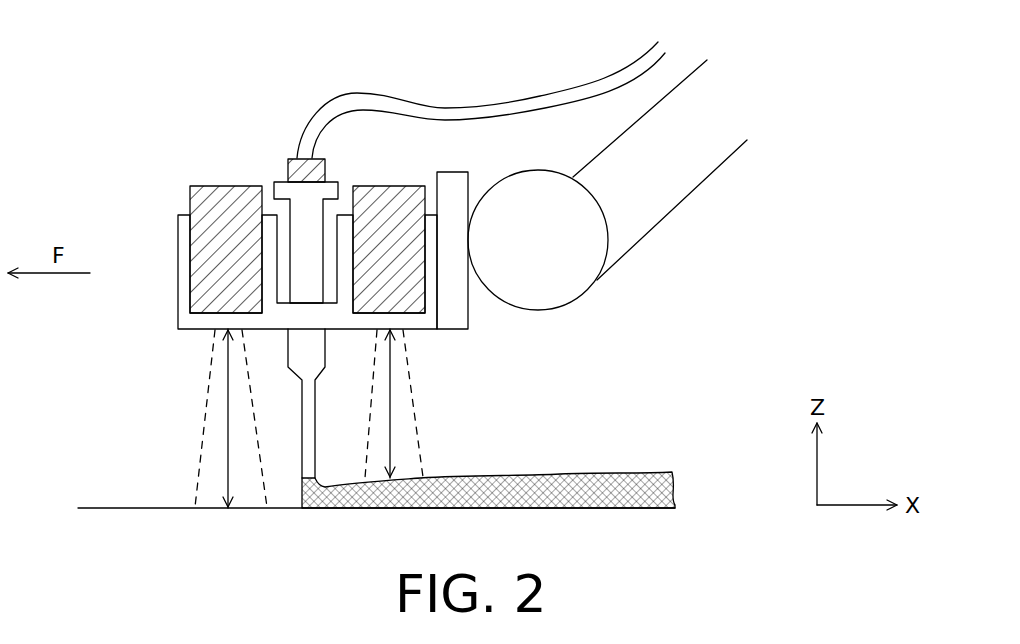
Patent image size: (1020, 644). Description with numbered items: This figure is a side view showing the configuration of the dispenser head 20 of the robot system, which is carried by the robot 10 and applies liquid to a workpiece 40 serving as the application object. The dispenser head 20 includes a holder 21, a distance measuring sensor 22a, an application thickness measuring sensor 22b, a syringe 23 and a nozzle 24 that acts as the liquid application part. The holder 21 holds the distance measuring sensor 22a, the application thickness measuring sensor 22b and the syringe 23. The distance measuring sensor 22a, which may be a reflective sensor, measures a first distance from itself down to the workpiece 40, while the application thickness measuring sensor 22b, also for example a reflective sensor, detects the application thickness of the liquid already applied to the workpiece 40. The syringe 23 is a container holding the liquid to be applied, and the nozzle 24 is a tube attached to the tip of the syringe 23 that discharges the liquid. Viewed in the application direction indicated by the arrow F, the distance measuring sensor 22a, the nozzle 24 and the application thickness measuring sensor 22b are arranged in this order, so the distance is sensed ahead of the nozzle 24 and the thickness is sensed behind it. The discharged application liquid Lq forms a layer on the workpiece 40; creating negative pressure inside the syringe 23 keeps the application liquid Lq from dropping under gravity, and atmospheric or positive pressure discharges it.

The robot 10 is at (647, 183).
The dispenser head 20 is at (185, 143).
The holder 21 is at (422, 323).
The distance measuring sensor 22a is at (223, 187).
The application thickness measuring sensor 22b is at (400, 193).
The syringe 23 is at (316, 237).
The nozzle 24 is at (308, 423).
The workpiece 40 is at (175, 508).
The application liquid Lq is at (572, 483).